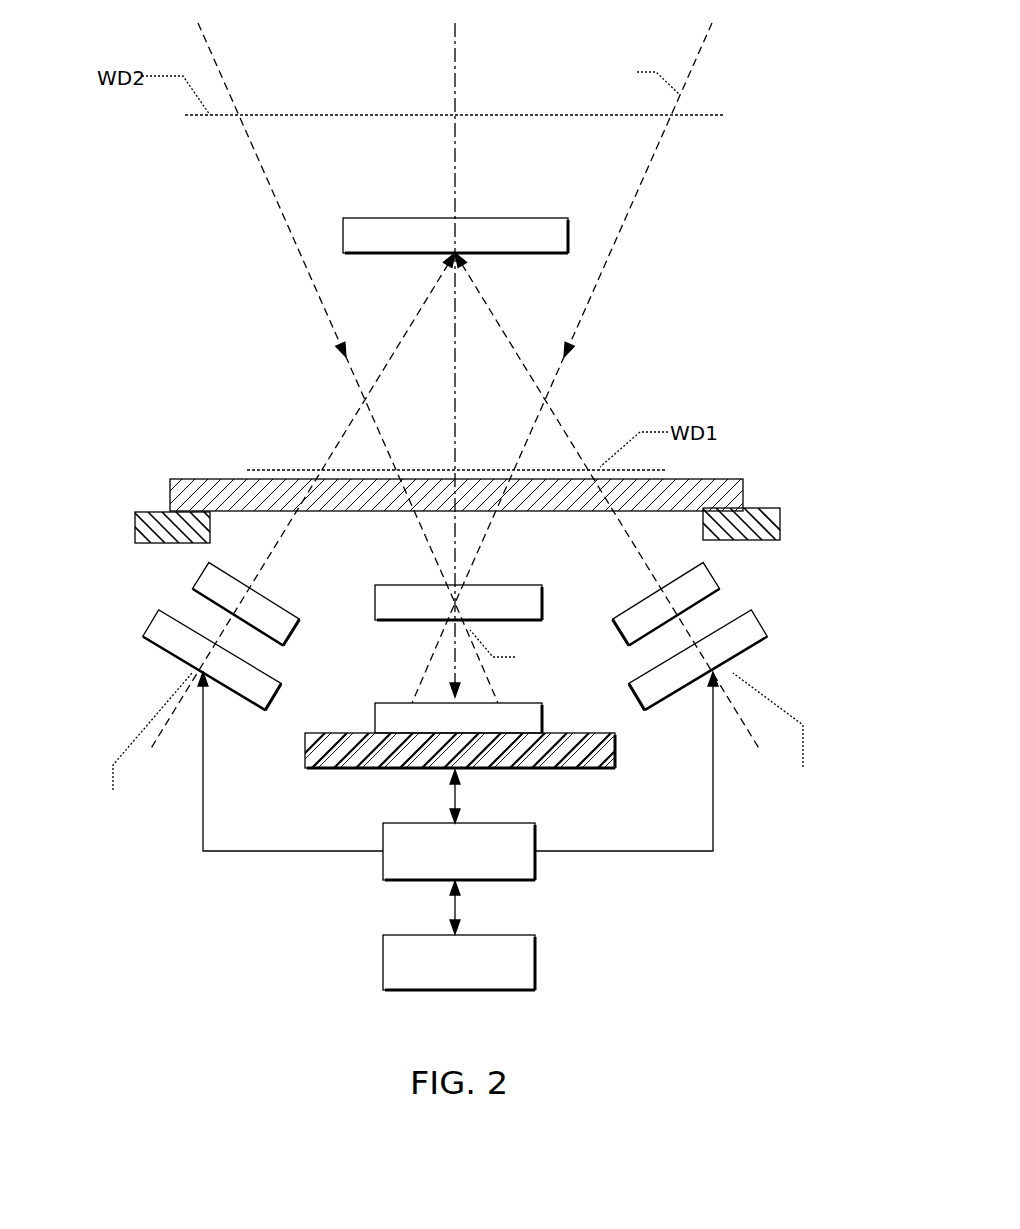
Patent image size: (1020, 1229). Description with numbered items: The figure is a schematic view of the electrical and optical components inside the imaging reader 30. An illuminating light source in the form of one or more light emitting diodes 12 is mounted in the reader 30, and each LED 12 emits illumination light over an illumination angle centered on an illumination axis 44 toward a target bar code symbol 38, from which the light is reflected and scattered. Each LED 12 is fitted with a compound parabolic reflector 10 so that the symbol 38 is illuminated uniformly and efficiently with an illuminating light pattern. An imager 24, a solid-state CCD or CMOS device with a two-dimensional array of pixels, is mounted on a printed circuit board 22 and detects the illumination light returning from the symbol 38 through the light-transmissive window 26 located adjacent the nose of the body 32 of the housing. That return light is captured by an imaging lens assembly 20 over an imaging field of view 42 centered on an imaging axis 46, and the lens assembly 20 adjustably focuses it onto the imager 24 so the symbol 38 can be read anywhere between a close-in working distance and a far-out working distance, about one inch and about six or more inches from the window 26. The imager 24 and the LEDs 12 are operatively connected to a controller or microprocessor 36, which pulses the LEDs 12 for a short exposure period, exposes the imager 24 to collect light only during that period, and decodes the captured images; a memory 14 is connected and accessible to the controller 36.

The compound parabolic reflector (CPR) 10 is at (205, 575).
The light emitting diode (LED) 12 is at (156, 620).
The memory 14 is at (537, 963).
The imaging lens assembly 20 is at (375, 604).
The printed circuit board 22 is at (305, 752).
The imager 24 is at (375, 722).
The window 26 is at (170, 497).
The imaging reader 30 is at (608, 379).
The body 32 is at (783, 528).
The controller 36 is at (537, 867).
The symbol 38 is at (384, 218).
The imaging field of view (FOV) 42 is at (652, 162).
The illumination axis 44 is at (410, 328).
The imaging axis 46 is at (457, 72).